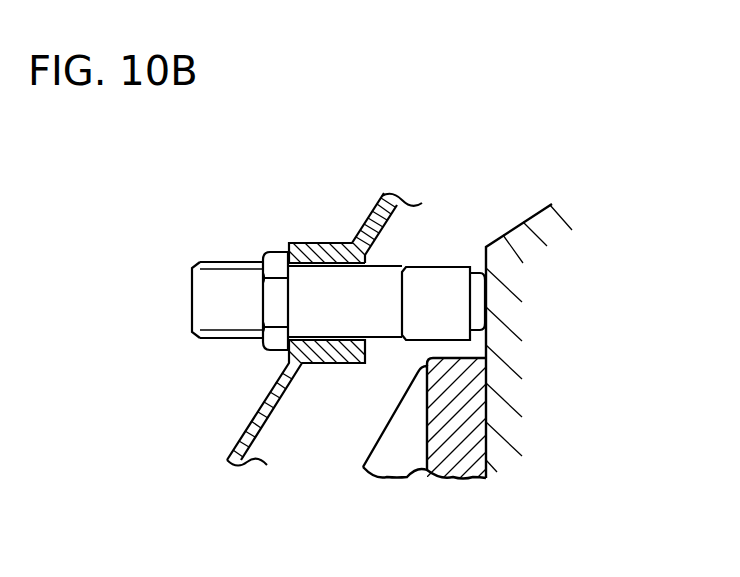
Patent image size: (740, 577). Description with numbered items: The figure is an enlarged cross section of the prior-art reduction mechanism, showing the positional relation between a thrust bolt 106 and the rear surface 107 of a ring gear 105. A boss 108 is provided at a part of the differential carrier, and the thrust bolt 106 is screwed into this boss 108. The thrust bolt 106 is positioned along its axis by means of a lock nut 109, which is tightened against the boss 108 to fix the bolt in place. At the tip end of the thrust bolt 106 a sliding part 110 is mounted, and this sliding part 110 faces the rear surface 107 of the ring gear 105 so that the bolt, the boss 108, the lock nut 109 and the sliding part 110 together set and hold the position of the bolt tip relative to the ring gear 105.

The ring gear 105 is at (522, 238).
The thrust bolt 106 is at (428, 287).
The rear surface 107 is at (487, 263).
The boss 108 is at (323, 243).
The lock nut 109 is at (278, 340).
The sliding part 110 is at (477, 302).